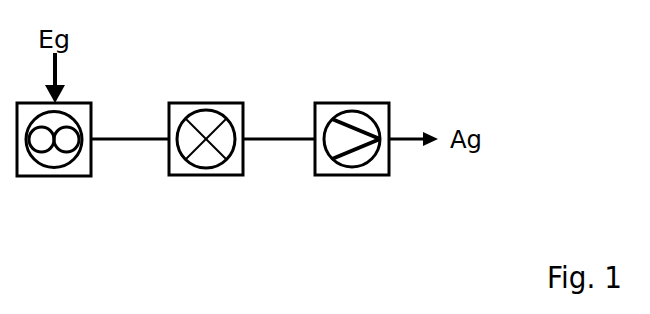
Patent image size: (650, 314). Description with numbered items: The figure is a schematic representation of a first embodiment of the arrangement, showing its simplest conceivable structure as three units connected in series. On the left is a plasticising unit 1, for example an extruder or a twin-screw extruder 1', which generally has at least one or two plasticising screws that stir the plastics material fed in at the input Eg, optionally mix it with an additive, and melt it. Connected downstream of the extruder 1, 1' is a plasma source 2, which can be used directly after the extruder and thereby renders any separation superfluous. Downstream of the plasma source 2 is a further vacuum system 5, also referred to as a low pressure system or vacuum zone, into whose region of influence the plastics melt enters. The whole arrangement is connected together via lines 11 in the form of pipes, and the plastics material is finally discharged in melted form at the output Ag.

The plasticising unit 1 is at (54, 178).
The twin-screw extruder 1' is at (54, 139).
The plasma source 2 is at (207, 92).
The vacuum system 5 is at (352, 92).
The lines 11 is at (131, 128).